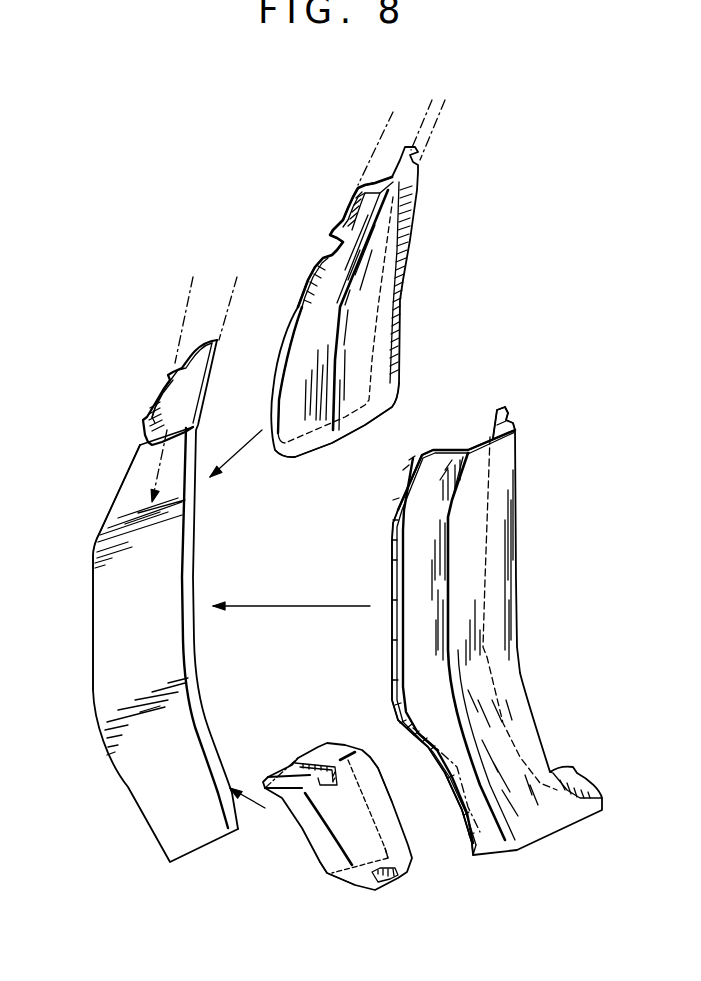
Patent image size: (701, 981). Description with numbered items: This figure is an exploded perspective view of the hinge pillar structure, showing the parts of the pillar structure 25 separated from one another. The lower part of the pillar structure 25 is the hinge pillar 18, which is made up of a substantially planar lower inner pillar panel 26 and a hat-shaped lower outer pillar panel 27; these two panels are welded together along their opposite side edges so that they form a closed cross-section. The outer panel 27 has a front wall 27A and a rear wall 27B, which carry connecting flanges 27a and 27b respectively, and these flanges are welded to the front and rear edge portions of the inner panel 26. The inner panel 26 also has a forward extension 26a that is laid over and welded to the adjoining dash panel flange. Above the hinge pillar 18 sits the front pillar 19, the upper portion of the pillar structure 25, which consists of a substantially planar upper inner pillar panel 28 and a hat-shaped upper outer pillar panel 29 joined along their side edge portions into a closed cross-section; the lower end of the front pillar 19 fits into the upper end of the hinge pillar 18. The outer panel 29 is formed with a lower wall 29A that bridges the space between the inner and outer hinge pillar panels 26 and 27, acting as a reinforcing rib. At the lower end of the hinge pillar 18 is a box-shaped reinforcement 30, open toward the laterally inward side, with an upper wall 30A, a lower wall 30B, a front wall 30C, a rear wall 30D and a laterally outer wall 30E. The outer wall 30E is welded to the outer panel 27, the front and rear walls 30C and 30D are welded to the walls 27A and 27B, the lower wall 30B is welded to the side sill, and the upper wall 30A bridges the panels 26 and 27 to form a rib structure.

The hinge pillar 18 is at (140, 833).
The front pillar 19 is at (282, 223).
The pillar structure 25 is at (555, 322).
The lower inner pillar panel 26 is at (176, 700).
The forward extension 26a is at (100, 688).
The lower outer pillar panel 27 is at (503, 657).
The front wall 27A is at (413, 664).
The rear wall 27B is at (510, 418).
The connecting flange 27b is at (503, 405).
The connecting flange 27a is at (460, 803).
The upper inner pillar panel 28 is at (198, 373).
The upper outer pillar panel 29 is at (388, 307).
The lower wall 29A is at (365, 420).
The reinforcement 30 is at (317, 863).
The upper wall 30A is at (322, 750).
The lower wall 30B is at (407, 872).
The front wall 30C is at (327, 878).
The rear wall 30D is at (385, 781).
The laterally outer wall 30E is at (375, 835).